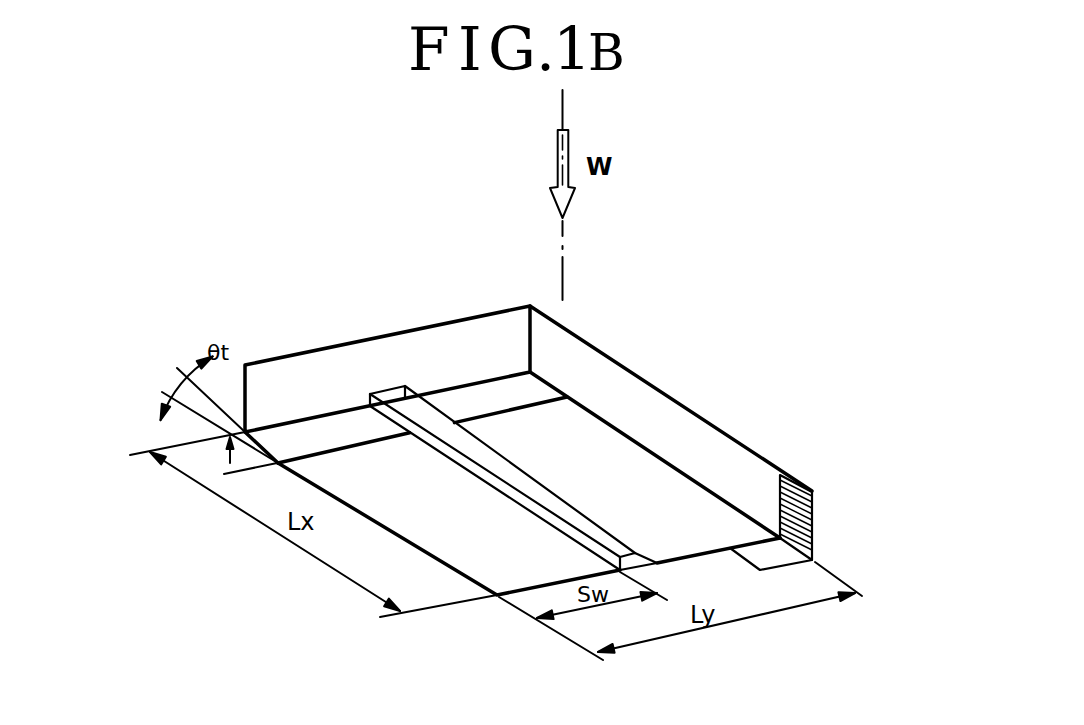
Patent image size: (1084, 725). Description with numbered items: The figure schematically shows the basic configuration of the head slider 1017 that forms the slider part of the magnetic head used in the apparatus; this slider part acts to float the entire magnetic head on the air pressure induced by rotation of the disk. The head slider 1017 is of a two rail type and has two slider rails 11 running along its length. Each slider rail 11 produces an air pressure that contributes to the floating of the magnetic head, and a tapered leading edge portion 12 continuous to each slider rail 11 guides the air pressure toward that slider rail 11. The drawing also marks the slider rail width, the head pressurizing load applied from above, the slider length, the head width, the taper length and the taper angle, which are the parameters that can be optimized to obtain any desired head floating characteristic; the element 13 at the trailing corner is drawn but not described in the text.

The head slider 1017 is at (736, 329).
The slider rail 11 is at (707, 507).
The tapered leading edge portion 12 is at (330, 422).
The magnetic head element 13 is at (812, 502).